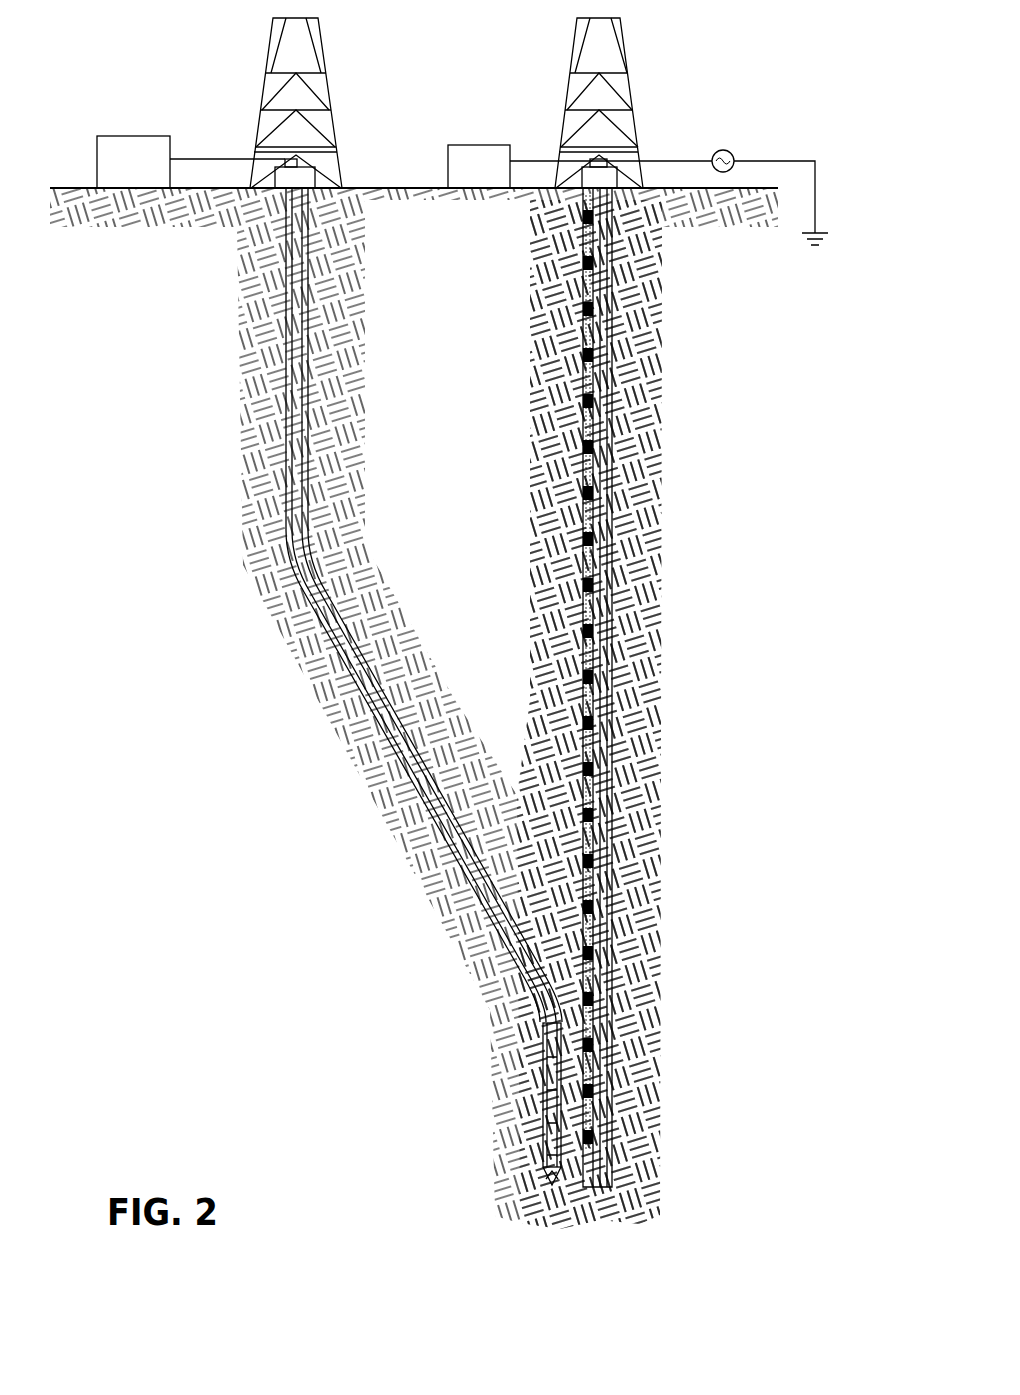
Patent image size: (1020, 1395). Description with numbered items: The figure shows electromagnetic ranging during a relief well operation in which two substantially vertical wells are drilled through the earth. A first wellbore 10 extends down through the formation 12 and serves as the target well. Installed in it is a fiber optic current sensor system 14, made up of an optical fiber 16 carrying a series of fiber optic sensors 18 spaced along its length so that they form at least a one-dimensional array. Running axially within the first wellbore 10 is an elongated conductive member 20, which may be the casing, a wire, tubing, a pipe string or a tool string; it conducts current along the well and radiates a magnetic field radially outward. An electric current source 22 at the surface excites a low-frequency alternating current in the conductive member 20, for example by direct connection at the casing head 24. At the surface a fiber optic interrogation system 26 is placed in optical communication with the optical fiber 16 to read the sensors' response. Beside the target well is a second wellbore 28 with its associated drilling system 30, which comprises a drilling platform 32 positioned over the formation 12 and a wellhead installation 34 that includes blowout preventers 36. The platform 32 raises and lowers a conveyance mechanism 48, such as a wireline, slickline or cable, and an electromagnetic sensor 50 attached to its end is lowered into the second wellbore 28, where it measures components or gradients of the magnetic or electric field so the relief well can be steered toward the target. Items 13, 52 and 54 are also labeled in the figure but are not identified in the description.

The first wellbore 10 is at (616, 333).
The formation 12 is at (560, 845).
The surface equipment 13 is at (128, 136).
The fiber optic current sensor system 14 is at (541, 342).
The optical fiber 16 is at (583, 423).
The fiber optic sensor 18 is at (587, 313).
The elongated conductive member 20 is at (603, 460).
The electric current source 22 is at (733, 152).
The casing head 24 is at (605, 177).
The fiber optic interrogation system 26 is at (480, 145).
The second wellbore 28 is at (287, 393).
The drilling system 30 is at (354, 79).
The drilling platform 32 is at (270, 45).
The wellhead installation 34 is at (336, 164).
The blowout preventers 36 is at (290, 172).
The conveyance mechanism 48 is at (345, 643).
The electromagnetic sensor 50 is at (542, 1142).
The sensor section 52 is at (535, 1093).
The tool tip 54 is at (548, 1187).